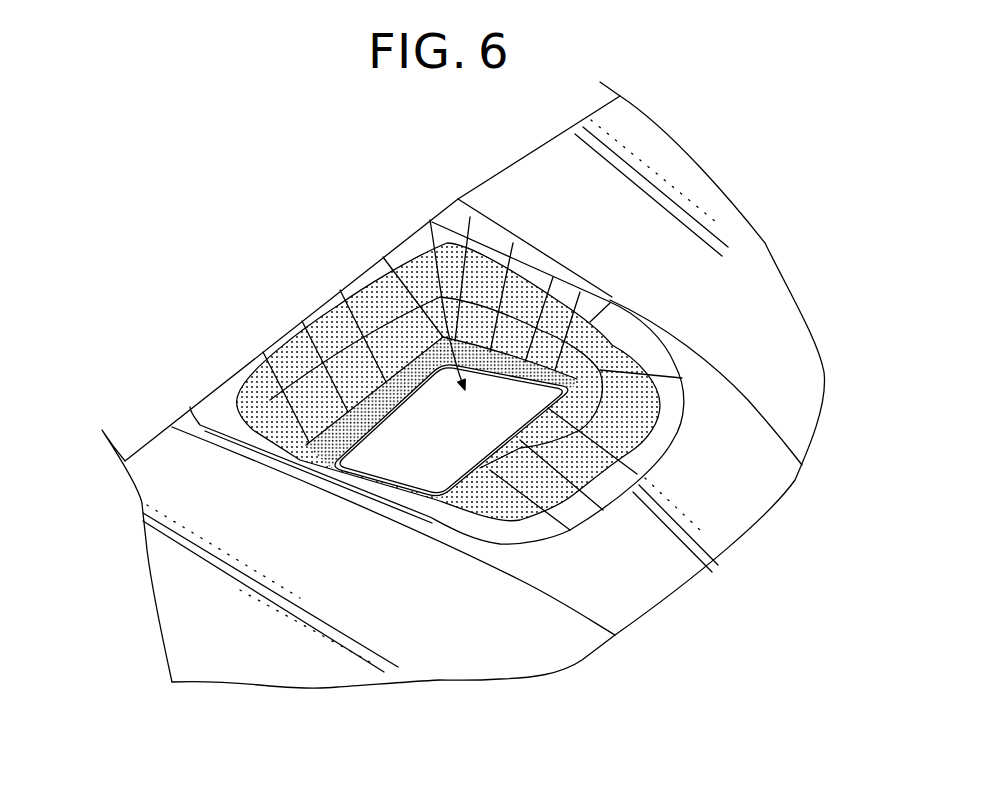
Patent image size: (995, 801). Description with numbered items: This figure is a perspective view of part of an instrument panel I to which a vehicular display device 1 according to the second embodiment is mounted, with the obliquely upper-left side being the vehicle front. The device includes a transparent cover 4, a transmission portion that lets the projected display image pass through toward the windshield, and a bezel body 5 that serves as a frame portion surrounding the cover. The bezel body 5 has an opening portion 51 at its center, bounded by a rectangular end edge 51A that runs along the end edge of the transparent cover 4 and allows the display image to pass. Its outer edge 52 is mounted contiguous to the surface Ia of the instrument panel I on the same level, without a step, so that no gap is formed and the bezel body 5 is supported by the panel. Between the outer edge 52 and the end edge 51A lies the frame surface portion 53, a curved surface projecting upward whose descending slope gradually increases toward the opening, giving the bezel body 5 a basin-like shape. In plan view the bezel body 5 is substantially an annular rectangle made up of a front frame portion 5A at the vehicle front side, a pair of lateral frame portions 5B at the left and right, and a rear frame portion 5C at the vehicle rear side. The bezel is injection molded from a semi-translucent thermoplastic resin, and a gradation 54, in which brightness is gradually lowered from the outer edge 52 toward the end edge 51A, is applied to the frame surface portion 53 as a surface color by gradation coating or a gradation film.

The vehicular display device 1 is at (347, 229).
The transparent cover 4 is at (462, 437).
The bezel body 5 is at (340, 300).
The front frame portion 5A is at (387, 297).
The lateral frame portions 5B is at (590, 322).
The rear frame portion 5C is at (610, 428).
The opening portion 51 is at (517, 335).
The end edge 51A is at (495, 378).
The outer edge 52 is at (560, 318).
The frame surface portion 53 is at (303, 337).
The gradation 54 is at (423, 285).
The instrument panel I is at (545, 170).
The surface of the instrument panel Ia is at (680, 193).